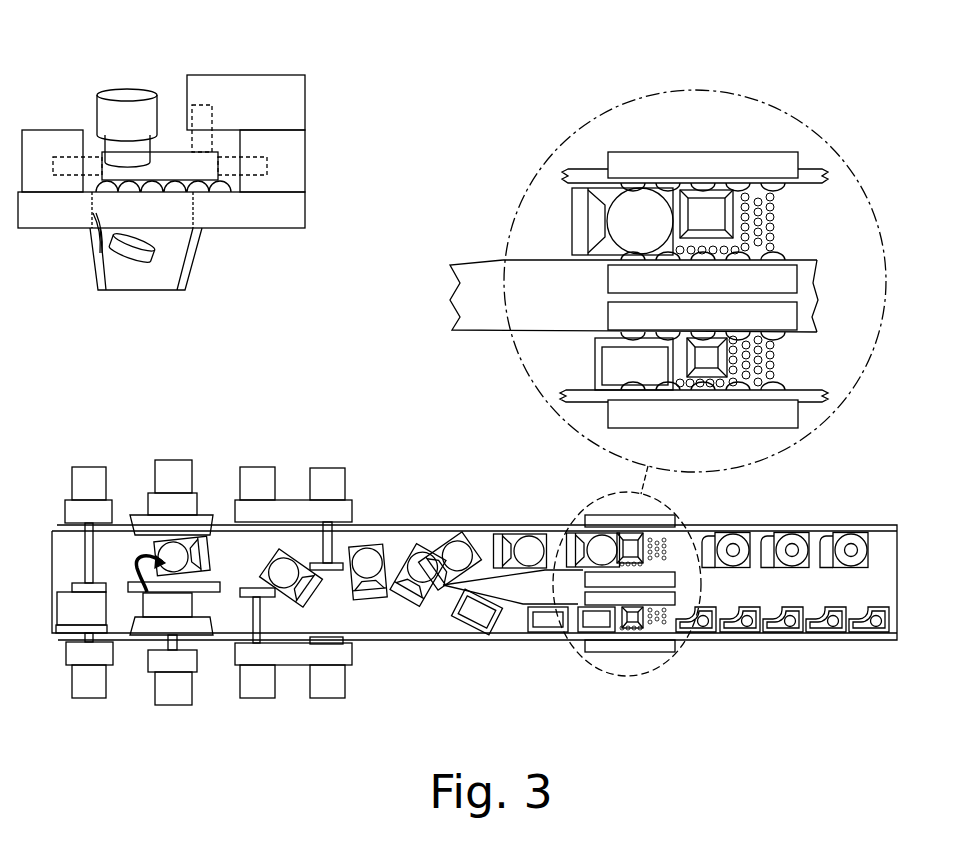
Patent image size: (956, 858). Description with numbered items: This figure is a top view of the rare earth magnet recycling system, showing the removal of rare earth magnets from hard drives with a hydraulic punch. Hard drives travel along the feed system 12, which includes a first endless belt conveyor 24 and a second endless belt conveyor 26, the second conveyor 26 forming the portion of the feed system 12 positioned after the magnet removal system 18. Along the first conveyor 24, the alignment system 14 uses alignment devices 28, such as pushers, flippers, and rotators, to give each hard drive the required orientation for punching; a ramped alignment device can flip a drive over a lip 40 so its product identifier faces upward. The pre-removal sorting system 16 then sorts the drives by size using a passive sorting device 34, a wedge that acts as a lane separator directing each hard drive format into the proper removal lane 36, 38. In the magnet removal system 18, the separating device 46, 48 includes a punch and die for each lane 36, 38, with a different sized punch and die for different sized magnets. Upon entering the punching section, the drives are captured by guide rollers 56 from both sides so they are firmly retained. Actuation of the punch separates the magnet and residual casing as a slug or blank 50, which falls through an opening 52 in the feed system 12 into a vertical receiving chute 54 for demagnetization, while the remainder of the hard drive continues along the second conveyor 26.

The feed system 12 is at (55, 541).
The alignment system 14 is at (72, 715).
The pre-removal sorting system 16 is at (477, 657).
The magnet removal system 18 is at (577, 677).
The first endless belt conveyor 24 is at (398, 548).
The second endless belt conveyor 26 is at (878, 588).
The alignment devices 28 is at (82, 626).
The passive sorting device 34 is at (485, 575).
The removal lane 36 is at (806, 229).
The removal lane 38 is at (806, 371).
The lip 40 is at (218, 582).
The separating device 46 is at (717, 196).
The separating device 48 is at (97, 115).
The slug or blank 50 is at (143, 264).
The opening 52 is at (98, 250).
The vertical receiving chute 54 is at (197, 242).
The guide rollers 56 is at (778, 187).